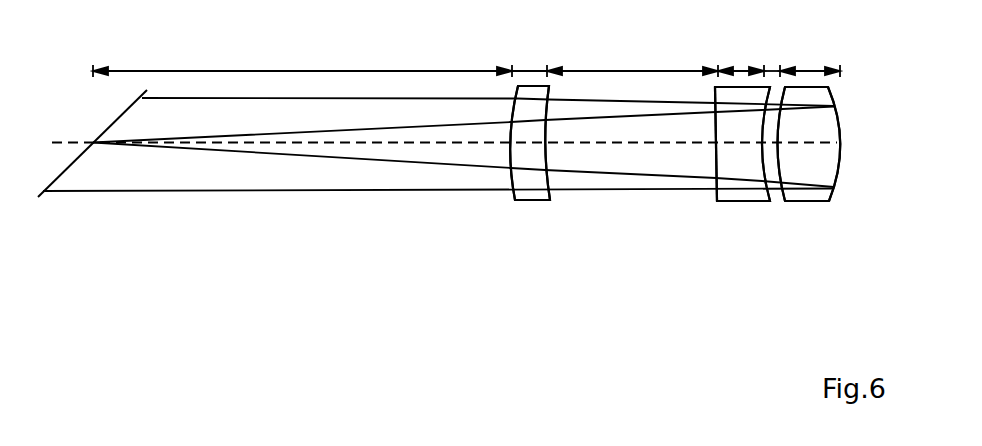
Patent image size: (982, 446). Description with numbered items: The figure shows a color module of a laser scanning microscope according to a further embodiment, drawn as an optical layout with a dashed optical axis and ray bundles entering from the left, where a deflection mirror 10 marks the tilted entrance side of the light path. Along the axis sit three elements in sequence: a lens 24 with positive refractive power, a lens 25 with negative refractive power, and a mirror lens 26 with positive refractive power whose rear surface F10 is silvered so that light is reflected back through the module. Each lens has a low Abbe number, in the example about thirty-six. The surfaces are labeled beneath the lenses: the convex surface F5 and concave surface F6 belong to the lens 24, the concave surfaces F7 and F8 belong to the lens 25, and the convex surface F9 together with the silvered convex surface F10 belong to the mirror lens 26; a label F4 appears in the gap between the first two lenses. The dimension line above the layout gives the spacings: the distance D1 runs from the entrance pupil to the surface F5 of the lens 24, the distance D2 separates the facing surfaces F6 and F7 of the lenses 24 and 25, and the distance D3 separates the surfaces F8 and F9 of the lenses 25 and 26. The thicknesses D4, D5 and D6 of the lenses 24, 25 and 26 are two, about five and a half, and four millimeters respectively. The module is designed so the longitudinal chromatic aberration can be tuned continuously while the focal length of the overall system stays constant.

The deflection mirror 10 is at (38, 197).
The lens 24 is at (541, 203).
The lens 25 is at (755, 203).
The mirror lens 26 is at (820, 203).
The surface F4 is at (633, 263).
The convex surface F5 is at (517, 201).
The concave surface F6 is at (549, 201).
The concave surface F7 is at (717, 201).
The concave surface F8 is at (770, 201).
The convex surface F9 is at (785, 201).
The convex surface F10 is at (829, 201).
The distance D1 is at (350, 68).
The distance D2 is at (597, 68).
The distance D3 is at (772, 68).
The thickness D4 is at (535, 68).
The thickness D5 is at (742, 68).
The thickness D6 is at (810, 68).